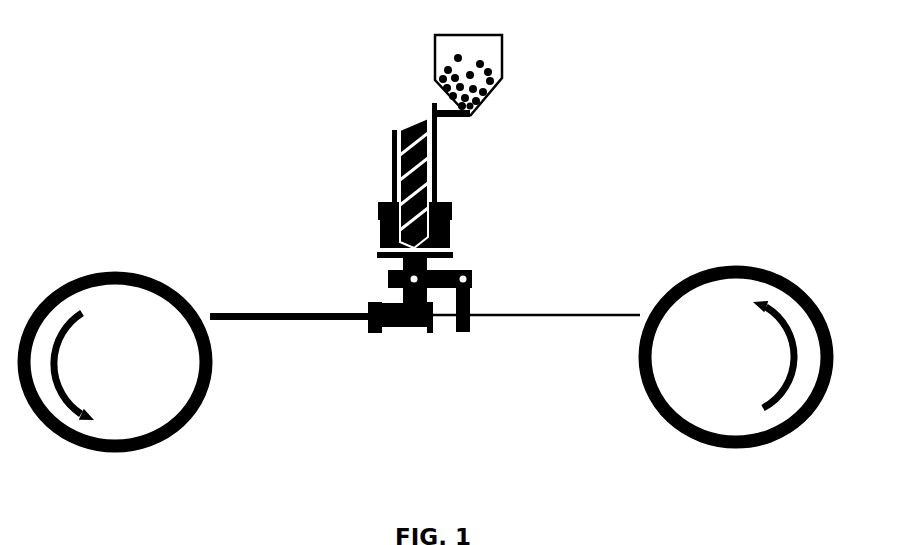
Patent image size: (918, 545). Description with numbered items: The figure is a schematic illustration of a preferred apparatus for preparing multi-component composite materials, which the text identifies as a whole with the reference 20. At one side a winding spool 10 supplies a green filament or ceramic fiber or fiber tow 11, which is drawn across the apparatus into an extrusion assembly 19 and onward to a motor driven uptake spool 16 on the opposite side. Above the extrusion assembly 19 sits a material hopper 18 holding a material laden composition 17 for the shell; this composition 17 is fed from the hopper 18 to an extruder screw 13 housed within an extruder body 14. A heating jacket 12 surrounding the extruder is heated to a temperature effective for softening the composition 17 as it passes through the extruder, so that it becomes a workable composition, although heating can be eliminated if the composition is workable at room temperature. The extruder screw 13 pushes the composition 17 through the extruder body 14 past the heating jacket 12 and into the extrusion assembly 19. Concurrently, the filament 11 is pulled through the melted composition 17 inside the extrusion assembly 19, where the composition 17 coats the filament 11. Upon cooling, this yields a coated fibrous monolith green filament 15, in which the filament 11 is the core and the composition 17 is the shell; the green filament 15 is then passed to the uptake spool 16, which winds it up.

The winding spool 10 is at (736, 340).
The green filament or fiber tow 11 is at (536, 303).
The heating jacket 12 is at (451, 227).
The extruder screw 13 is at (412, 124).
The extruder body 14 is at (393, 167).
The coated fibrous monolith green filament 15 is at (290, 304).
The motor driven uptake spool 16 is at (115, 351).
The material laden composition 17 is at (455, 57).
The material hopper 18 is at (503, 65).
The extrusion assembly 19 is at (405, 328).
The feeder assembly 20 is at (645, 141).